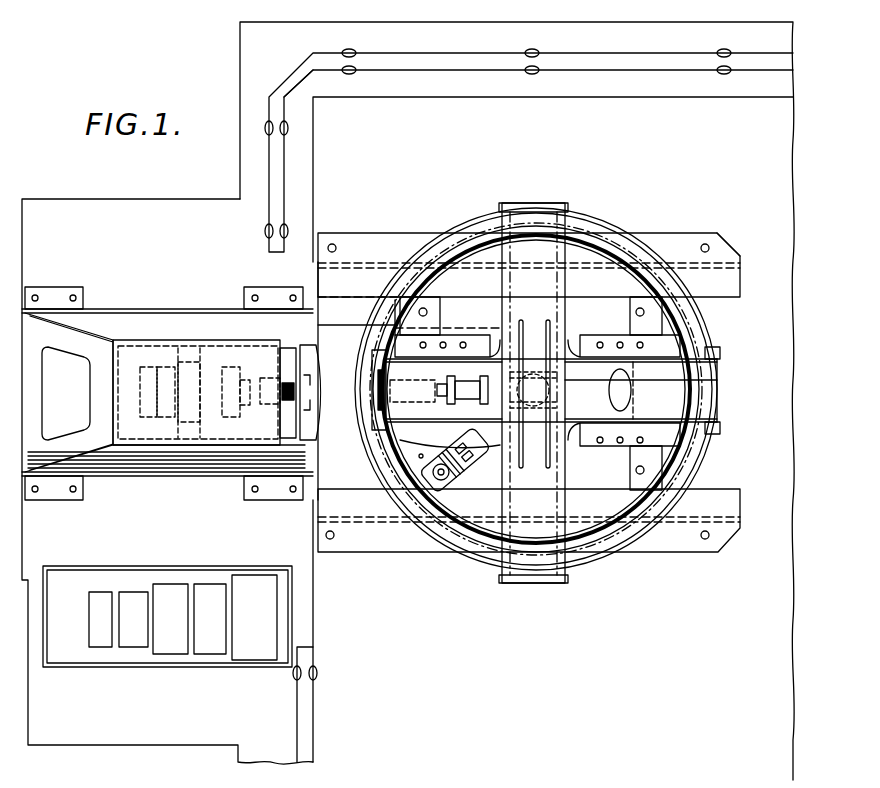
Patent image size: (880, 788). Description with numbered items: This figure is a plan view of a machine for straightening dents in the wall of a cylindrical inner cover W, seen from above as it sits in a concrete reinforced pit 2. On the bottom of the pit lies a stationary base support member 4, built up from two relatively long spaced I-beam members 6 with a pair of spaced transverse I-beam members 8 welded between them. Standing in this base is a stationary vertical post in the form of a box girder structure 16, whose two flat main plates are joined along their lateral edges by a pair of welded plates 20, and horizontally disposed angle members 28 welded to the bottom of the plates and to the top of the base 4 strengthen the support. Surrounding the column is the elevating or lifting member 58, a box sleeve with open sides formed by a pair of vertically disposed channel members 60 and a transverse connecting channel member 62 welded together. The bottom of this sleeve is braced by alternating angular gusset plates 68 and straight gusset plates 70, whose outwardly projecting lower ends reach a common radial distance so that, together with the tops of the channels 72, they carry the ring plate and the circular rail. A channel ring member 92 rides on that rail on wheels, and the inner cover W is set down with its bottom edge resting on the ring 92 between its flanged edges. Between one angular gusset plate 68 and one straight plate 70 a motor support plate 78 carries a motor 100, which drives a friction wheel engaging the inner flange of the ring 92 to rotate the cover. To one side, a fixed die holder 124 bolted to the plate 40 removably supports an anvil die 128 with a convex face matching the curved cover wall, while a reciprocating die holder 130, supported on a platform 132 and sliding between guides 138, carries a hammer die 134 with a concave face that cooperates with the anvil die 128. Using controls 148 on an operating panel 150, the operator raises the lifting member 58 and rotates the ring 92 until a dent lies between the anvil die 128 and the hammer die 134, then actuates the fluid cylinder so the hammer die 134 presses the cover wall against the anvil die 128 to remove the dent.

The concrete reinforced pit 2 is at (370, 118).
The stationary base support member 4 is at (744, 215).
The long spaced I-beam members 6 is at (738, 253).
The transverse I-beam members 8 is at (426, 317).
The box girder structure 16 is at (655, 403).
The welded plates 20 is at (660, 374).
The angle members 28 is at (665, 440).
The plate 40 is at (452, 376).
The elevating or lifting member 58 is at (589, 437).
The vertically disposed channel members 60 is at (530, 360).
The transverse connecting channel member 62 is at (556, 388).
The angular gusset plates 68 is at (718, 352).
The straight gusset plates 70 is at (502, 285).
The channels 72 is at (540, 203).
The motor support plate 78 is at (470, 495).
The channel ring member 92 is at (603, 226).
The inner cover W is at (624, 252).
The motor 100 is at (466, 452).
The fixed die holder 124 is at (379, 360).
The anvil die 128 is at (373, 382).
The reciprocating die holder 130 is at (292, 345).
The platform 132 is at (130, 312).
The hammer die 134 is at (310, 450).
The guides 138 is at (160, 338).
The controls 148 is at (165, 592).
The operating panel 150 is at (218, 570).